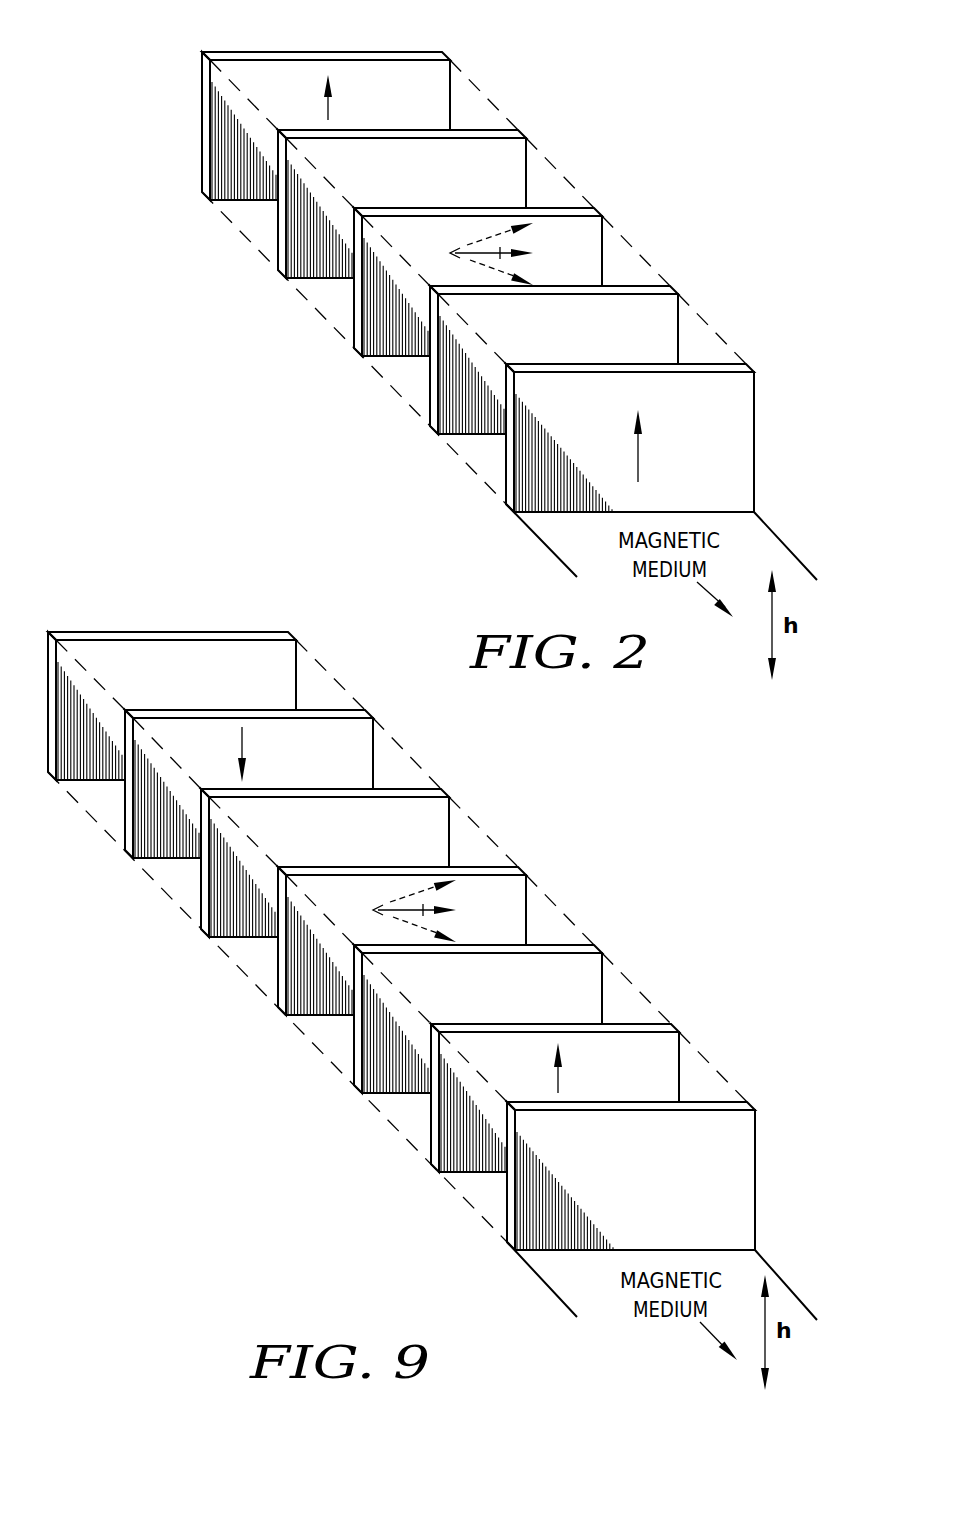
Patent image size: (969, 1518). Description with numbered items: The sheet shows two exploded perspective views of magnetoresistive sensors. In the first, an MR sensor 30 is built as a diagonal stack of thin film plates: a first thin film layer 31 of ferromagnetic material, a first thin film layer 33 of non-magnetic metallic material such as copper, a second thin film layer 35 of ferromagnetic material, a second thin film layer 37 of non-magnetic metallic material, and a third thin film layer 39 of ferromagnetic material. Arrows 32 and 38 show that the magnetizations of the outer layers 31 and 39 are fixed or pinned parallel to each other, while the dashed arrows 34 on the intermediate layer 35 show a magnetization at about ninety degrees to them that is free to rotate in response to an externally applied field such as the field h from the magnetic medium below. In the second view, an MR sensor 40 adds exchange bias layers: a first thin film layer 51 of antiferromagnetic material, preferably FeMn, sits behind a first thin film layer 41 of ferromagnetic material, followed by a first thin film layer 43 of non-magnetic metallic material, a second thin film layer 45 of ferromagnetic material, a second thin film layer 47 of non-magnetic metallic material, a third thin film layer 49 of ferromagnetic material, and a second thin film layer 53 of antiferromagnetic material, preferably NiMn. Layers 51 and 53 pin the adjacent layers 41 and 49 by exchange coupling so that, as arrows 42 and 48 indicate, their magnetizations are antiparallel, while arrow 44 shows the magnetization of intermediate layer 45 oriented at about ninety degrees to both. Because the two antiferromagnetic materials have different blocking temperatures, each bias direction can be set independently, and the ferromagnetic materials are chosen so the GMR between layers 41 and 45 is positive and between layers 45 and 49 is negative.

In FIG. 2, the MR sensor 30 is at (598, 115).
In FIG. 2, the first thin film layer of ferromagnetic material 31 is at (420, 52).
In FIG. 2, the arrow 32 is at (330, 90).
In FIG. 2, the first thin film layer of non-magnetic metallic material 33 is at (503, 130).
In FIG. 2, the arrows 34 is at (540, 253).
In FIG. 2, the second thin film layer of ferromagnetic material 35 is at (572, 209).
In FIG. 2, the second thin film layer of non-magnetic metallic material 37 is at (632, 288).
In FIG. 2, the arrow 38 is at (640, 420).
In FIG. 2, the third thin film layer of ferromagnetic material 39 is at (747, 438).
In FIG. 9, the MR sensor 40 is at (232, 1047).
In FIG. 9, the first thin film layer of ferromagnetic material 41 is at (350, 710).
In FIG. 9, the arrow 42 is at (245, 735).
In FIG. 9, the first thin film layer of non-magnetic metallic material 43 is at (425, 789).
In FIG. 9, the arrow 44 is at (398, 907).
In FIG. 9, the second thin film layer of ferromagnetic material 45 is at (493, 867).
In FIG. 9, the second thin film layer of non-magnetic metallic material 47 is at (557, 944).
In FIG. 9, the arrow 48 is at (560, 1053).
In FIG. 9, the third thin film layer of ferromagnetic material 49 is at (647, 1024).
In FIG. 9, the first thin film layer of antiferromagnetic material 51 is at (270, 633).
In FIG. 9, the second thin film layer of antiferromagnetic material 53 is at (740, 1102).